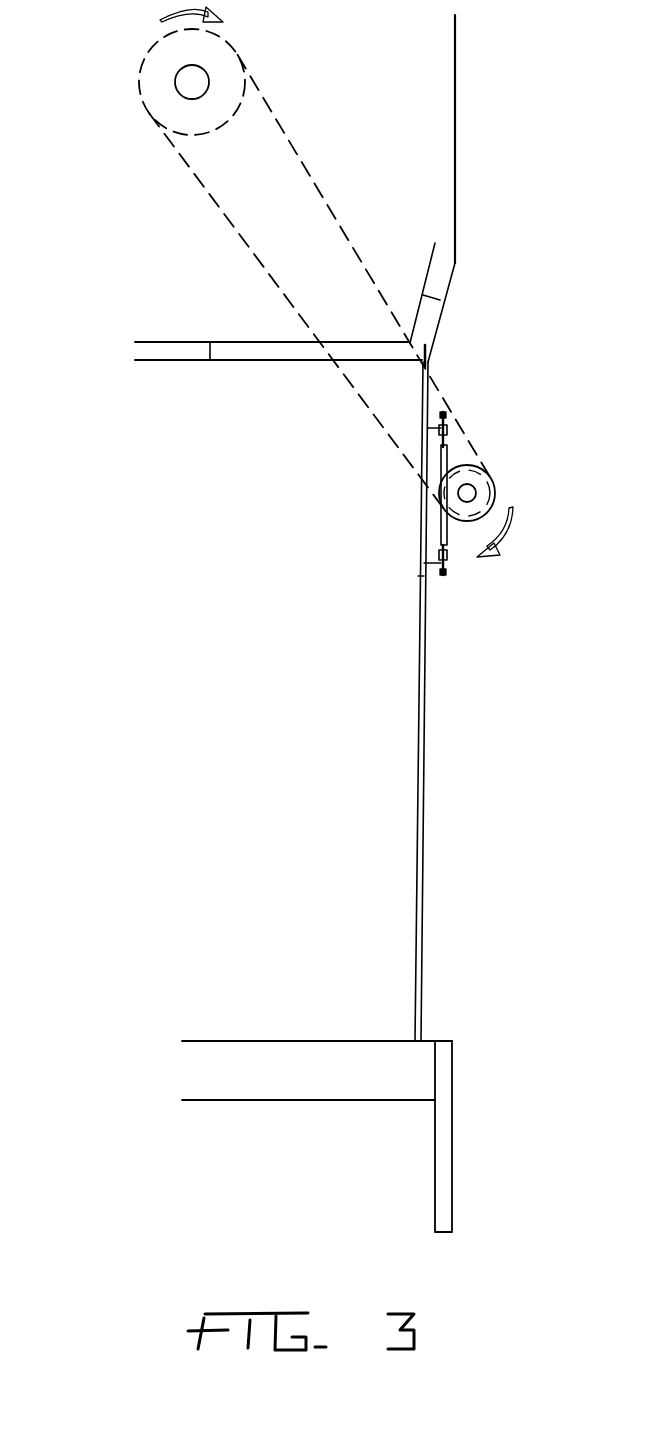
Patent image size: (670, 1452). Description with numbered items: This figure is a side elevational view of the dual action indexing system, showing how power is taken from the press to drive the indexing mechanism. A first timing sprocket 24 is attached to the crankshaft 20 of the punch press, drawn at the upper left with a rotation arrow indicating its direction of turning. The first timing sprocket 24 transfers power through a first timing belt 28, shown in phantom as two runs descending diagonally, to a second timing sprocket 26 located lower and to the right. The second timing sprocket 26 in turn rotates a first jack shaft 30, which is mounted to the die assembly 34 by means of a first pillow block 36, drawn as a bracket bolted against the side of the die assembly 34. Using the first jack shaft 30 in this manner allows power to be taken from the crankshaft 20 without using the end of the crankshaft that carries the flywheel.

The crankshaft 20 is at (199, 78).
The first timing sprocket 24 is at (150, 89).
The second timing sprocket 26 is at (473, 463).
The first timing belt 28 is at (332, 217).
The first jack shaft 30 is at (470, 490).
The die assembly 34 is at (424, 903).
The first pillow block 36 is at (430, 563).